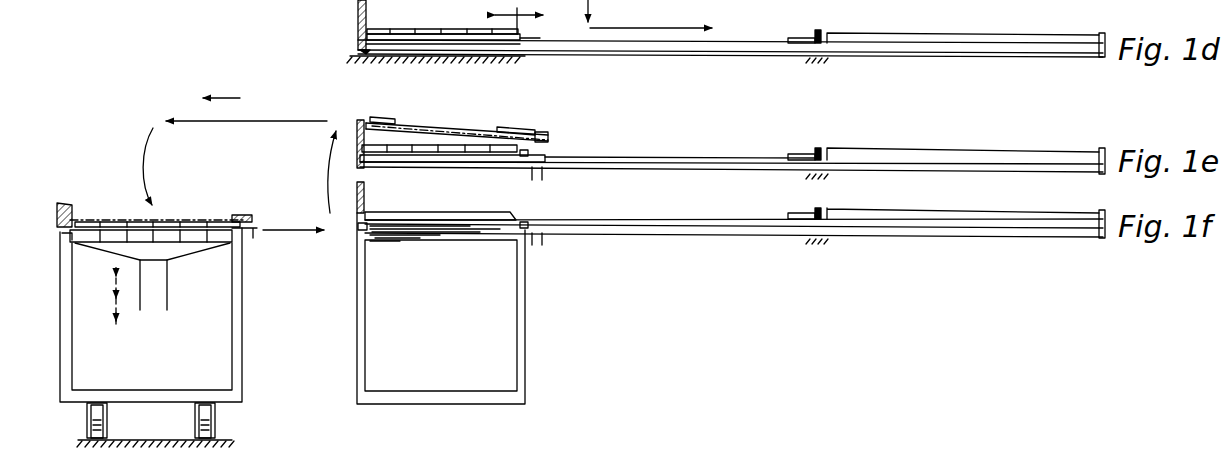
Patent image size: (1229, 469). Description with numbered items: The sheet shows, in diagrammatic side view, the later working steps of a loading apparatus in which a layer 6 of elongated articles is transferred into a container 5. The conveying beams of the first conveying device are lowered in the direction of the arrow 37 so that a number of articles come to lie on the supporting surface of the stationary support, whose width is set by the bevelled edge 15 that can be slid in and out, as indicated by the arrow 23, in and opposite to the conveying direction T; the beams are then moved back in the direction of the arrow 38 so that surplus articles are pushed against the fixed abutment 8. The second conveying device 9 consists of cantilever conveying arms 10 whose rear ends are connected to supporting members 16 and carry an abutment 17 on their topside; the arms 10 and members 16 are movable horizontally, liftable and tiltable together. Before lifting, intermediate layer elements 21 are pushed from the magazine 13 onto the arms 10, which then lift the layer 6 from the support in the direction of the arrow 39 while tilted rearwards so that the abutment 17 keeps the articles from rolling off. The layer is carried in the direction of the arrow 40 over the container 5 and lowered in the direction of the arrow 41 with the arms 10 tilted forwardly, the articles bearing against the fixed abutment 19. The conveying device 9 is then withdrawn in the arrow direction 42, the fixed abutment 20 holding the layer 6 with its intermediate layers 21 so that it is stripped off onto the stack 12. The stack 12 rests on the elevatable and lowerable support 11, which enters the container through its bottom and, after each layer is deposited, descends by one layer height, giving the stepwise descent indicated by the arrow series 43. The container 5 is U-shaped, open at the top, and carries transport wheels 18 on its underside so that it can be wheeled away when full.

In FIG. 1f, the container 5 is at (239, 320).
In FIG. 1d, the layer 6 is at (443, 30).
In FIG. 1e, the layer 6 is at (471, 124).
In FIG. 1f, the layer 6 is at (177, 220).
In FIG. 1d, the fixed abutment 8 is at (820, 31).
In FIG. 1e, the second conveying device 9 is at (550, 137).
In FIG. 1e, the conveying arm 10 is at (479, 168).
In FIG. 1f, the conveying arm 10 is at (440, 226).
In FIG. 1f, the elevatable and lowerable support 11 is at (170, 295).
In FIG. 1f, the stack 12 is at (70, 236).
In FIG. 1f, the magazine 13 is at (526, 337).
In FIG. 1d, the bevelled edge 15 is at (520, 38).
In FIG. 1e, the supporting member 16 is at (546, 177).
In FIG. 1f, the supporting member 16 is at (531, 233).
In FIG. 1e, the abutment 17 is at (535, 127).
In FIG. 1f, the transport wheels 18 is at (88, 421).
In FIG. 1f, the fixed abutment 19 is at (62, 204).
In FIG. 1f, the fixed abutment 20 is at (240, 215).
In FIG. 1e, the intermediate layer elements 21 is at (384, 117).
In FIG. 1d, the arrow 23 is at (518, 9).
In FIG. 1d, the arrow 37 is at (592, 6).
In FIG. 1d, the arrow 38 is at (657, 28).
In FIG. 1f, the arrow 39 is at (329, 160).
In FIG. 1f, the arrow 40 is at (257, 121).
In FIG. 1f, the arrow 41 is at (147, 166).
In FIG. 1f, the arrow direction 42 is at (301, 229).
In FIG. 1f, the arrow series 43 is at (118, 281).
In FIG. 1f, the conveying direction T is at (228, 96).